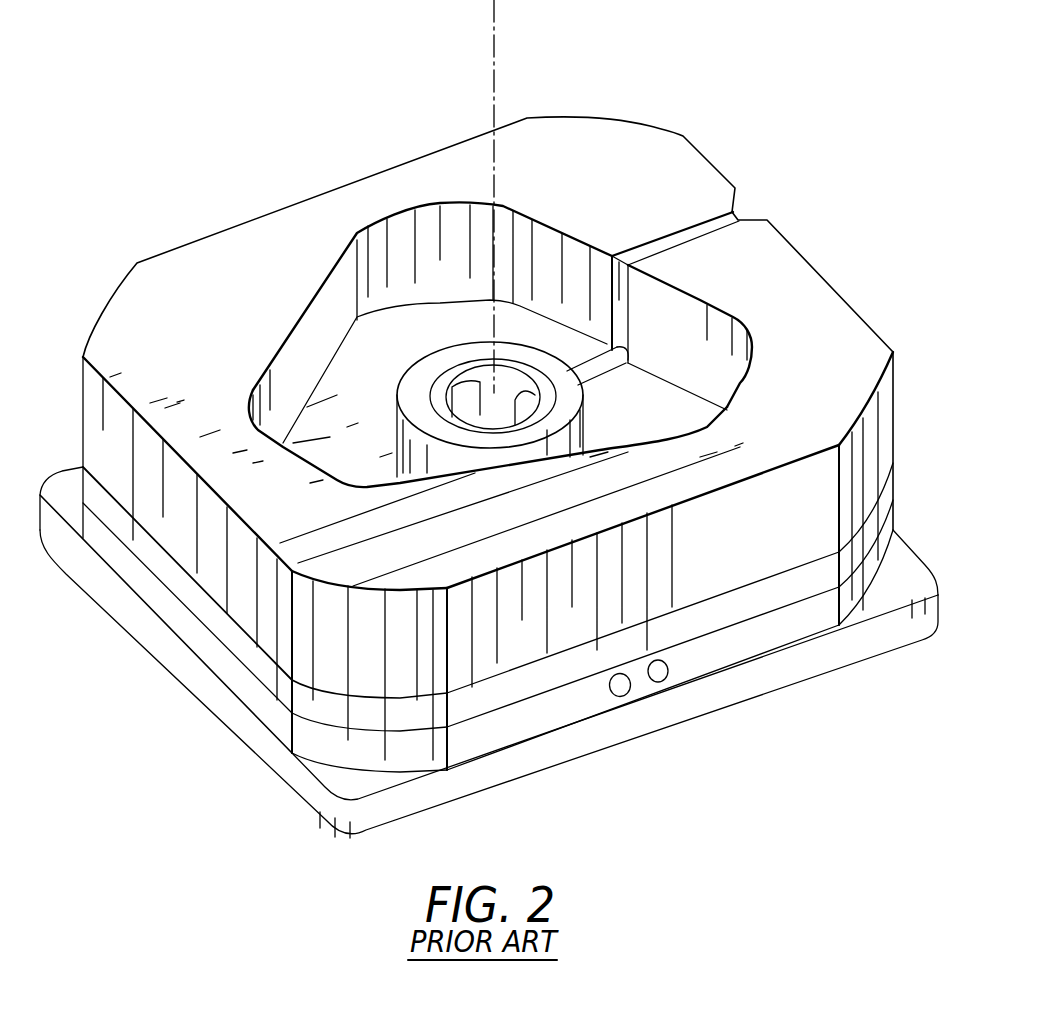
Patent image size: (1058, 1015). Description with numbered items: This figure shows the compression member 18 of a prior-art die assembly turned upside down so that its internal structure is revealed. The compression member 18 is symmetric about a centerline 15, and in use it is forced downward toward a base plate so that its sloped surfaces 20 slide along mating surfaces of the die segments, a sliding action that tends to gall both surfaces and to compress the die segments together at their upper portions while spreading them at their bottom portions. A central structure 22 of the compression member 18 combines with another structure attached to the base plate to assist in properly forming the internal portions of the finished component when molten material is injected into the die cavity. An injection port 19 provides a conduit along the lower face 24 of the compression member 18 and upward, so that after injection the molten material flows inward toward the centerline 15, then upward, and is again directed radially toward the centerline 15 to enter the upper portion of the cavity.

The centerline 15 is at (497, 45).
The compression member 18 is at (338, 192).
The injection port 19 is at (730, 210).
The sloped surfaces 20 is at (297, 345).
The central structure 22 is at (428, 363).
The lower face 24 is at (773, 250).